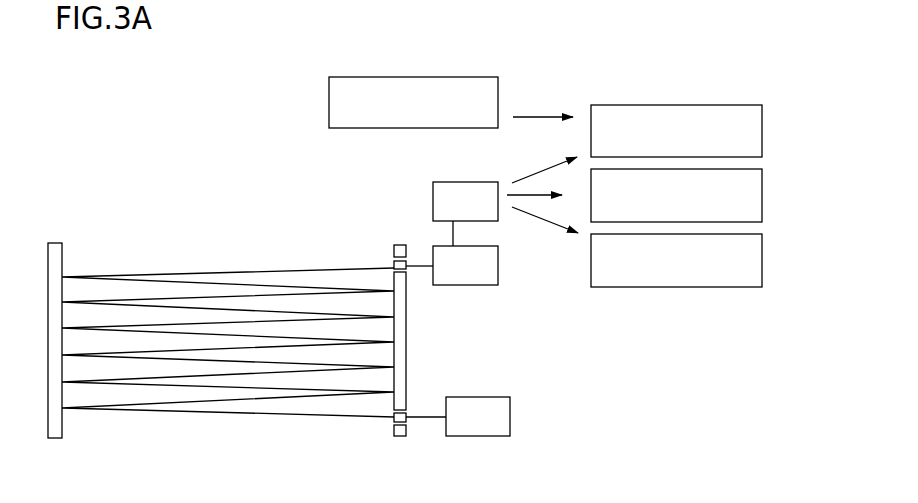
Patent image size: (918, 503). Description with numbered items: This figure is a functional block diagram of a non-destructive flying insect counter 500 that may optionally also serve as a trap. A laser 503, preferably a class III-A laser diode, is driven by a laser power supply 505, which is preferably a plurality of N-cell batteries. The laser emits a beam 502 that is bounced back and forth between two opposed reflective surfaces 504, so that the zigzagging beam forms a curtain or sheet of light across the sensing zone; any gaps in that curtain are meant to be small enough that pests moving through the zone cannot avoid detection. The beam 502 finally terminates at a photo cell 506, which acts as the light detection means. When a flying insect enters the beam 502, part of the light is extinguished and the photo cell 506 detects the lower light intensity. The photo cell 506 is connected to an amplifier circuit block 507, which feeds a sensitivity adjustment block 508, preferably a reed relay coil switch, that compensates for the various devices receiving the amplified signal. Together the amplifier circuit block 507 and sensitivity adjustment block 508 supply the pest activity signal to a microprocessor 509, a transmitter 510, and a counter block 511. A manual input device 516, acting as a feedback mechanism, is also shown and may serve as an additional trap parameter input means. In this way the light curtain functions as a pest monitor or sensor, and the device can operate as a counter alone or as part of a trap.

The counter 500 is at (198, 188).
The beam 502 is at (217, 380).
The laser 503 is at (388, 421).
The reflective surfaces 504 is at (49, 357).
The laser power supply 505 is at (503, 437).
The photo cell 506 is at (391, 256).
The amplifier circuit block 507 is at (485, 285).
The sensitivity adjustment block 508 is at (465, 182).
The microprocessor 509 is at (763, 195).
The transmitter 510 is at (763, 130).
The counter block 511 is at (763, 262).
The manual input device 516 is at (470, 75).